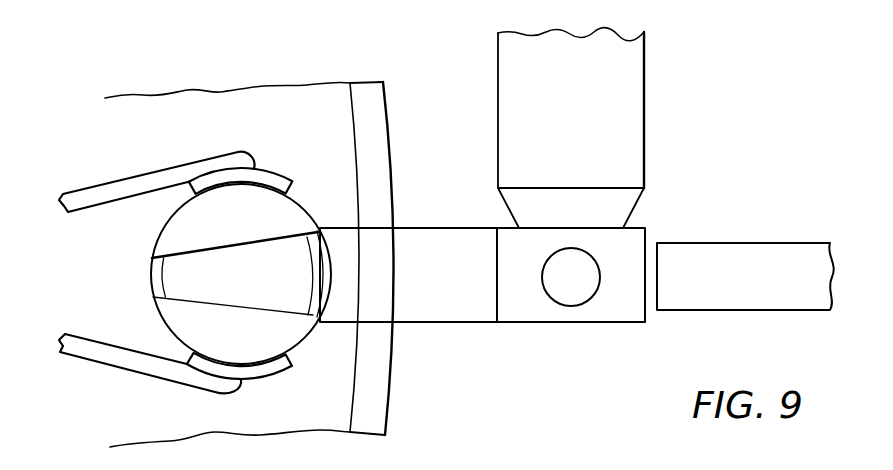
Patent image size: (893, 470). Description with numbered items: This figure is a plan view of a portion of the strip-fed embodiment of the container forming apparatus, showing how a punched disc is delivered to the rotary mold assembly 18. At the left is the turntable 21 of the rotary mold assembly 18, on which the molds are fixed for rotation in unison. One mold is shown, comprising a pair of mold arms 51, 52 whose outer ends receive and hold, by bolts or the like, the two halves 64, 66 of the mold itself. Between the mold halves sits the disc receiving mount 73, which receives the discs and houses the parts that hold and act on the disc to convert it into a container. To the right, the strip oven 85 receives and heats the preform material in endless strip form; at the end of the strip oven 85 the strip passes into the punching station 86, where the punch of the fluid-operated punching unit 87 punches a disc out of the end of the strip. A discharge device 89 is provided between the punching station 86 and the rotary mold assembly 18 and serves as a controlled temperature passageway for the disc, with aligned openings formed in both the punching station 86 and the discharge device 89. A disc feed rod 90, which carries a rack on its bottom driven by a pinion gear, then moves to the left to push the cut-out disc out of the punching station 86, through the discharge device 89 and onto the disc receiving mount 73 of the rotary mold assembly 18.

The rotary mold assembly 18 is at (391, 123).
The turntable 21 is at (316, 137).
The mold arm 51 is at (181, 166).
The mold arm 52 is at (143, 374).
The mold half 64 is at (290, 213).
The mold half 66 is at (293, 334).
The disc receiving mount 73 is at (152, 276).
The strip oven 85 is at (637, 102).
The punching station 86 is at (639, 286).
The punching unit 87 is at (565, 296).
The discharge device 89 is at (449, 287).
The disc feed rod 90 is at (782, 266).